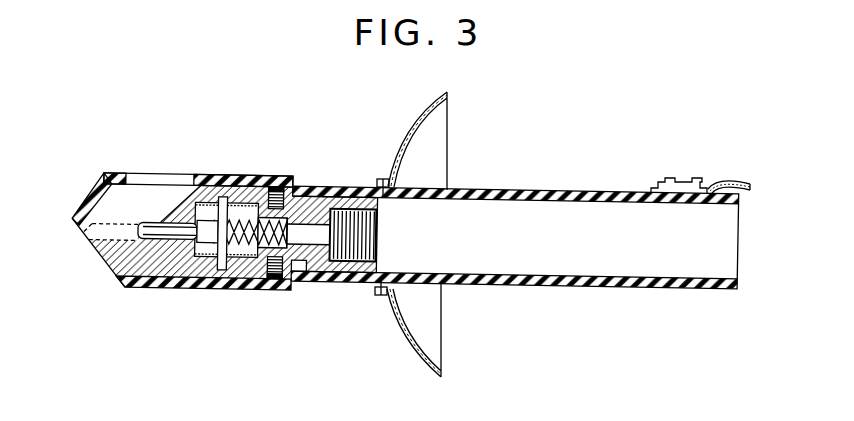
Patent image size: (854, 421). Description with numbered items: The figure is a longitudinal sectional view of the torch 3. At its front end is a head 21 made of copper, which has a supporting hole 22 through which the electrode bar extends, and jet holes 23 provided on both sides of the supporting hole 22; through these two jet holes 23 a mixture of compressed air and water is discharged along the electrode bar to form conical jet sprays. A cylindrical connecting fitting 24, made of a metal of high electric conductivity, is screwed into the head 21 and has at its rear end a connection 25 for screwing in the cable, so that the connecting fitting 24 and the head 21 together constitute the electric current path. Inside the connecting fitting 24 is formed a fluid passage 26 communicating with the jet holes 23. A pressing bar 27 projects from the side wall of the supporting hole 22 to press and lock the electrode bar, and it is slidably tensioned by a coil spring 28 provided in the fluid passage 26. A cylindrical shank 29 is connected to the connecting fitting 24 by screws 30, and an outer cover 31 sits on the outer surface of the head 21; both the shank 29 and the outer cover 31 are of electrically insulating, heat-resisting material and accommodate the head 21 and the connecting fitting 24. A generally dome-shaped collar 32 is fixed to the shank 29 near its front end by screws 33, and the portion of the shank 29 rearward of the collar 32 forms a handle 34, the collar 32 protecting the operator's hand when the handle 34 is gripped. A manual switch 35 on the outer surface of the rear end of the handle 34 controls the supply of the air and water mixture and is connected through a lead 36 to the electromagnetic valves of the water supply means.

The torch 3 is at (300, 140).
The head 21 is at (142, 262).
The supporting hole 22 is at (155, 192).
The jet holes 23 is at (97, 238).
The connecting fitting 24 is at (297, 203).
The connection 25 is at (348, 259).
The fluid passage 26 is at (315, 231).
The pressing bar 27 is at (170, 238).
The coil spring 28 is at (245, 243).
The shank 29 is at (536, 287).
The screws 30 is at (277, 189).
The outer cover 31 is at (212, 182).
The collar 32 is at (403, 331).
The screws 33 is at (385, 181).
The handle 34 is at (538, 192).
The manual switch 35 is at (682, 186).
The lead 36 is at (735, 182).